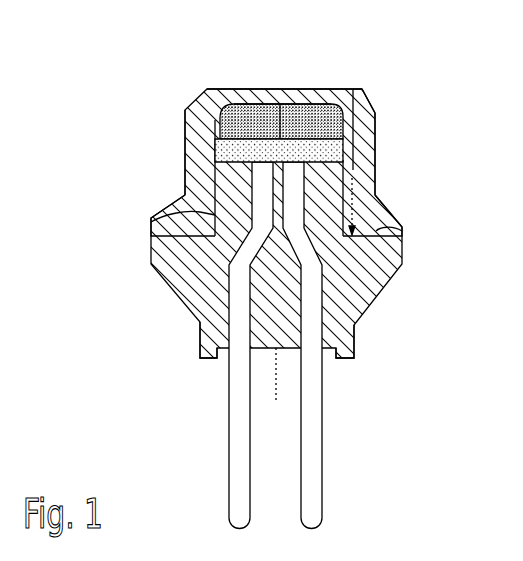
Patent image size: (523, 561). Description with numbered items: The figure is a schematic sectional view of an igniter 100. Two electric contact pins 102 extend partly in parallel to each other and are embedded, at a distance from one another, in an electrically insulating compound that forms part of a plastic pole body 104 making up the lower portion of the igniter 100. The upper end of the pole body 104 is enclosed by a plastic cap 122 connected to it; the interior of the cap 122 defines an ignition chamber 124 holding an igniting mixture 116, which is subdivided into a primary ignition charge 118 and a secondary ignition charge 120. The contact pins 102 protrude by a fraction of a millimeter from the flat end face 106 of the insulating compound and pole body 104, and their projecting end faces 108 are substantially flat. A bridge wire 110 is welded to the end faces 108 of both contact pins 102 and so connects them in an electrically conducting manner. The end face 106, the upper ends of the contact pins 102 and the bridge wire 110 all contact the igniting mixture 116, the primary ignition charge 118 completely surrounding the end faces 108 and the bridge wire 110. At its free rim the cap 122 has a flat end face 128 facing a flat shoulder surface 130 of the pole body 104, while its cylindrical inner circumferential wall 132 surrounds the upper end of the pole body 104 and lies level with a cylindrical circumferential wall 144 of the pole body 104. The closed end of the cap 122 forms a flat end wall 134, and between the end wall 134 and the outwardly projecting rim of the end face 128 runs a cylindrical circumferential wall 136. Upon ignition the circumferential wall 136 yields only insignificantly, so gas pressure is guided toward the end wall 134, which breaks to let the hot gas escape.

The igniter 100 is at (212, 53).
The electric contact pins 102 is at (303, 477).
The pole body 104 is at (200, 322).
The end face 106 is at (343, 160).
The end faces 108 is at (247, 104).
The bridge wire 110 is at (290, 105).
The igniting mixture 116 is at (376, 115).
The primary ignition charge 118 is at (216, 146).
The secondary ignition charge 120 is at (222, 122).
The cap 122 is at (184, 194).
The ignition chamber 124 is at (325, 106).
The end face 128 is at (402, 229).
The shoulder surface 130 is at (402, 240).
The inner circumferential wall 132 is at (184, 172).
The end wall 134 is at (357, 89).
The circumferential wall 136 is at (377, 140).
The circumferential wall 144 is at (151, 222).